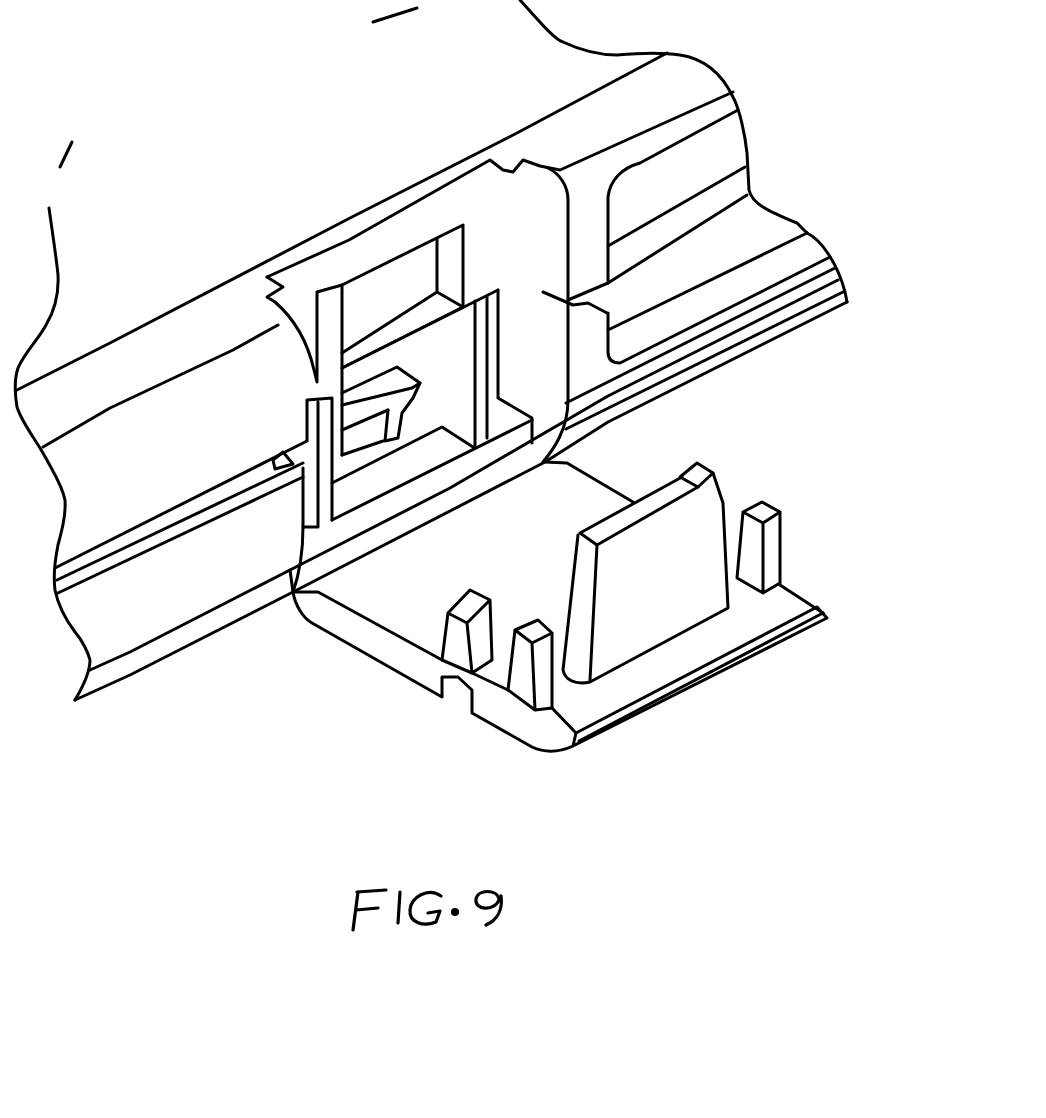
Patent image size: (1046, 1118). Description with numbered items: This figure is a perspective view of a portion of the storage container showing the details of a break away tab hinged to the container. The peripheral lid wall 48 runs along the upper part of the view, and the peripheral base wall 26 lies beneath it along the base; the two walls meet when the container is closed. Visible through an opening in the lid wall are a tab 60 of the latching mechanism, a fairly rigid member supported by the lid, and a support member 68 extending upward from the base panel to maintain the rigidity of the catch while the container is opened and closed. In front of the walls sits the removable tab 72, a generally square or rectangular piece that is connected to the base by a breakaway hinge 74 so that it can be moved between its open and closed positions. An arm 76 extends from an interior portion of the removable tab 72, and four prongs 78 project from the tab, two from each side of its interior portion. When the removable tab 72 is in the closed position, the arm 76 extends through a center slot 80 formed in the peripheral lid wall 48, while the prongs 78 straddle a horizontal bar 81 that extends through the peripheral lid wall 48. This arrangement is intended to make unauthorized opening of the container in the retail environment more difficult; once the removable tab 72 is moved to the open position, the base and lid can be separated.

The peripheral base wall 26 is at (813, 245).
The peripheral lid wall 48 is at (703, 78).
The tab 60 is at (437, 374).
The support member 68 is at (463, 393).
The removable tab 72 is at (587, 492).
The breakaway hinge 74 is at (293, 592).
The arm 76 is at (707, 520).
The prongs 78 is at (470, 593).
The center slot 80 is at (367, 288).
The horizontal bar 81 is at (307, 400).